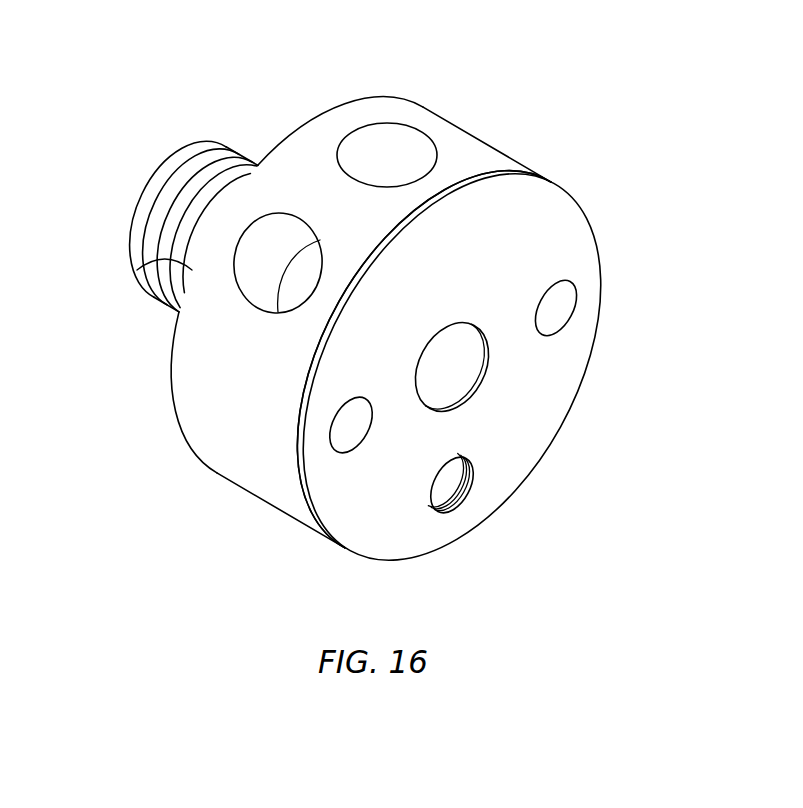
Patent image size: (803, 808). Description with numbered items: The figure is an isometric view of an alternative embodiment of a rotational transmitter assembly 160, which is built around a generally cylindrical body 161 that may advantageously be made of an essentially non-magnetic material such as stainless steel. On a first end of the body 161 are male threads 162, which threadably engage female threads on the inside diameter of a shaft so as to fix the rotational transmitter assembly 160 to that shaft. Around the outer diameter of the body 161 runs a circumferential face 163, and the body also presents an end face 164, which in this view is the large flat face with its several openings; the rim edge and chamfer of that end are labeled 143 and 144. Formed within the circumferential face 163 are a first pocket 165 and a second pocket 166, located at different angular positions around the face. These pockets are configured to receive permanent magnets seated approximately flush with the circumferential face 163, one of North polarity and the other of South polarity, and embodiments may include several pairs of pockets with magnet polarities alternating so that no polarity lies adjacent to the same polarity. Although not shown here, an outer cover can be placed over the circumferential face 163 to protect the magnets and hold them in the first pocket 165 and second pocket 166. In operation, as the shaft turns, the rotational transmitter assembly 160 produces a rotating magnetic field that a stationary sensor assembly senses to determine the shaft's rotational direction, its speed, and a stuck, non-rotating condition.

The rotational transmitter assembly 160 is at (371, 338).
The body 161 is at (155, 201).
The male threads 162 is at (137, 270).
The circumferential face 163 is at (186, 423).
The end face 164 is at (523, 441).
The first pocket 165 is at (413, 148).
The second pocket 166 is at (262, 286).
The rim edge 143 is at (600, 248).
The chamfer 144 is at (593, 220).